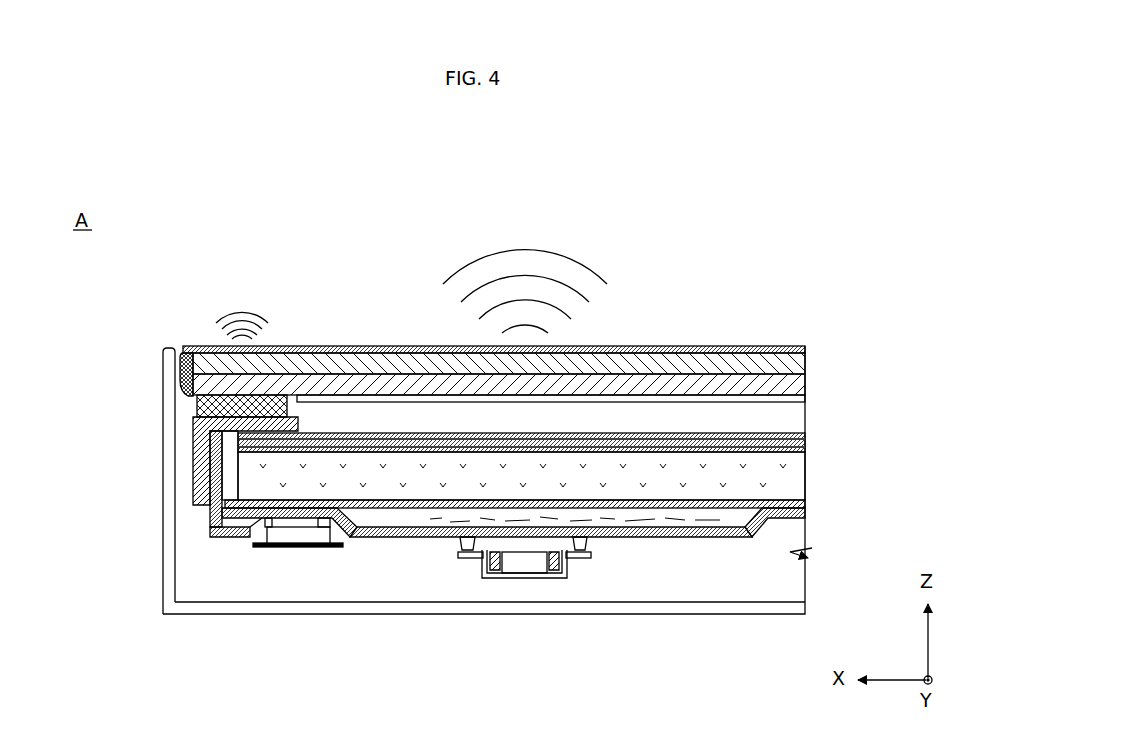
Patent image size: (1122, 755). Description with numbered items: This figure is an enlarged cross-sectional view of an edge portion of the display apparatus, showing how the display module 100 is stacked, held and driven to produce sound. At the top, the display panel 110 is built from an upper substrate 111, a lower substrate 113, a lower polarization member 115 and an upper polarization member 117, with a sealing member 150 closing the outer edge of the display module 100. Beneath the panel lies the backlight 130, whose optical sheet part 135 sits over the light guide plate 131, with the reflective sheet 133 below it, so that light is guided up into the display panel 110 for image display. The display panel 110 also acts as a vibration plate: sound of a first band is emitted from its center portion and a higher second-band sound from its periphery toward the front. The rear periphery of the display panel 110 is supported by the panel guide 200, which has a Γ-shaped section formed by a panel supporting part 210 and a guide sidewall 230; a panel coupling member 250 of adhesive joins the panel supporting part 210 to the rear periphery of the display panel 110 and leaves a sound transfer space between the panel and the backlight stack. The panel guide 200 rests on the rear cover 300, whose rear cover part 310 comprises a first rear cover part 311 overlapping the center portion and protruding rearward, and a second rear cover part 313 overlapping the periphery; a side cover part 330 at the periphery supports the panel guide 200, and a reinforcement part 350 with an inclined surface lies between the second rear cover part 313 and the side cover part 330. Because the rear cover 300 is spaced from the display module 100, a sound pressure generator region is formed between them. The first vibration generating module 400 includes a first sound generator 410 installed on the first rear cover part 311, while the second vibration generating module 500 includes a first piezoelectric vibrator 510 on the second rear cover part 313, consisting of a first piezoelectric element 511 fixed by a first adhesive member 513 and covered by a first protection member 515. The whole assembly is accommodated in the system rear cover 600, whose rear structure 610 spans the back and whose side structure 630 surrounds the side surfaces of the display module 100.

The display module 100 is at (541, 378).
The display panel 110 is at (498, 320).
The upper substrate 111 is at (750, 364).
The lower substrate 113 is at (708, 385).
The lower polarization member 115 is at (797, 277).
The upper polarization member 117 is at (797, 349).
The backlight 130 is at (589, 475).
The light guide plate 131 is at (805, 472).
The reflective sheet 133 is at (805, 505).
The optical sheet part 135 is at (805, 434).
The sealing member 150 is at (183, 356).
The panel guide 200 is at (173, 450).
The panel supporting part 210 is at (200, 452).
The guide sidewall 230 is at (224, 484).
The panel coupling member 250 is at (197, 408).
The rear cover 300 is at (426, 576).
The rear cover part 310 is at (513, 615).
The first rear cover part 311 is at (420, 538).
The second rear cover part 313 is at (352, 530).
The side cover part 330 is at (212, 522).
The reinforcement part 350 is at (215, 540).
The first vibration generating module 400 is at (552, 608).
The first sound generator 410 is at (580, 574).
The second vibration generating module 500 is at (280, 620).
The first piezoelectric vibrator 510 is at (280, 620).
The first piezoelectric element 511 is at (300, 548).
The first adhesive member 513 is at (325, 548).
The first protection member 515 is at (270, 548).
The system rear cover 600 is at (426, 493).
The rear structure 610 is at (205, 615).
The side structure 630 is at (168, 578).